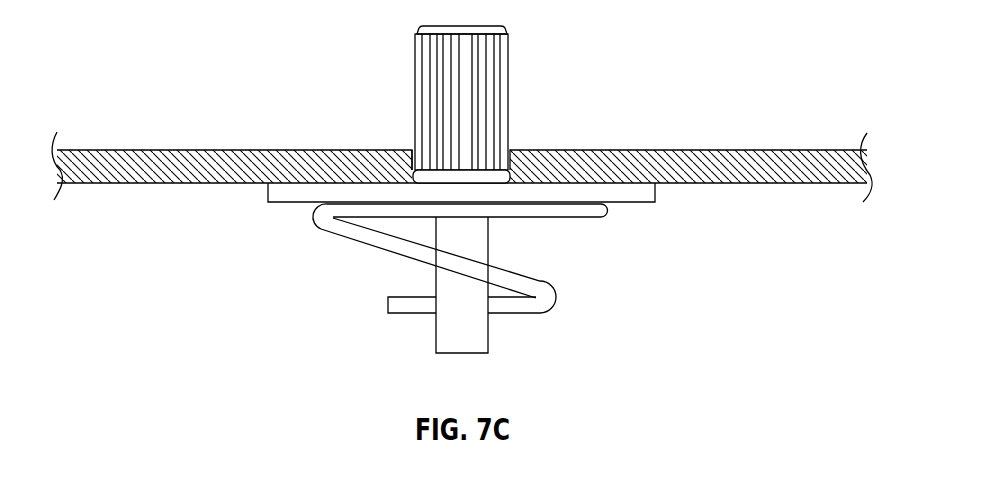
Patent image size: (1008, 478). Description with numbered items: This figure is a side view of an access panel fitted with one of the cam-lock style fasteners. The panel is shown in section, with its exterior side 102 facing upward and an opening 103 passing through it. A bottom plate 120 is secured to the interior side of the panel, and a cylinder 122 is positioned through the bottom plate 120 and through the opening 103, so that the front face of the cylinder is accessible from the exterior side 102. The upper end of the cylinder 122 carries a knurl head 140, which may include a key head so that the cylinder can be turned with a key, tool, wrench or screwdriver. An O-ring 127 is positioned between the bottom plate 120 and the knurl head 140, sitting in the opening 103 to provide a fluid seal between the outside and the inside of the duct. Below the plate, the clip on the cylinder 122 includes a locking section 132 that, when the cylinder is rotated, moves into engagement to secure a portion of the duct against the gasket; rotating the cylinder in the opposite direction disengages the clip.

The exterior side 102 is at (768, 170).
The opening 103 is at (407, 159).
The bottom plate 120 is at (292, 206).
The cylinder 122 is at (432, 339).
The O-ring 127 is at (512, 178).
The locking section 132 is at (553, 297).
The knurl head 140 is at (495, 70).